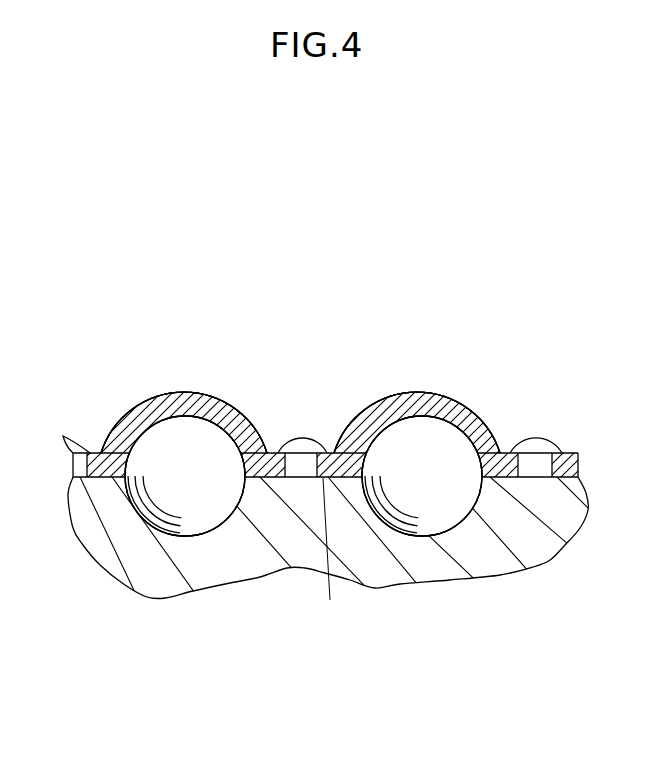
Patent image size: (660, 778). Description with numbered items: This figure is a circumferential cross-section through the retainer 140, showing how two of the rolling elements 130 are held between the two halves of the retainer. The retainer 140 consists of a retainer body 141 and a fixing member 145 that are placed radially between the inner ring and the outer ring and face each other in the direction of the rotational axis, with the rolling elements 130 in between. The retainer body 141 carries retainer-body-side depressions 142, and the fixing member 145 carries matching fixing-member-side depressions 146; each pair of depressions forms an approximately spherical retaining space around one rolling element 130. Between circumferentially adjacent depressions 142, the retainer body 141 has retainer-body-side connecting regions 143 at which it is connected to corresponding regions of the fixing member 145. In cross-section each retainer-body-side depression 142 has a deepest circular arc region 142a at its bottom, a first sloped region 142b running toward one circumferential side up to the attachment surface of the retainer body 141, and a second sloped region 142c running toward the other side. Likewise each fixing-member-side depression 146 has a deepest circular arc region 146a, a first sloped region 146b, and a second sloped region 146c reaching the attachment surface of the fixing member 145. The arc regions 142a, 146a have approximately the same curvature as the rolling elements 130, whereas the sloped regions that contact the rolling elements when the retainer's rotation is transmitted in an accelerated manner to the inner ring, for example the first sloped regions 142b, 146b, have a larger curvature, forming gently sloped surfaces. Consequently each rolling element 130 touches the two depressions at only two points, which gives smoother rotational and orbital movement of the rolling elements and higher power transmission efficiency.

The rolling element 130 is at (303, 451).
The retainer 140 is at (340, 485).
The retainer body 141 is at (290, 619).
The retainer-body-side depression 142 is at (316, 584).
The deepest circular arc region 142a is at (180, 516).
The first sloped region 142b is at (226, 535).
The second sloped region 142c is at (128, 495).
The retainer-body-side connecting region 143 is at (583, 500).
The fixing member 145 is at (297, 334).
The fixing-member-side depression 146 is at (292, 358).
The deepest circular arc region 146a is at (160, 437).
The first sloped region 146b is at (233, 425).
The second sloped region 146c is at (117, 442).